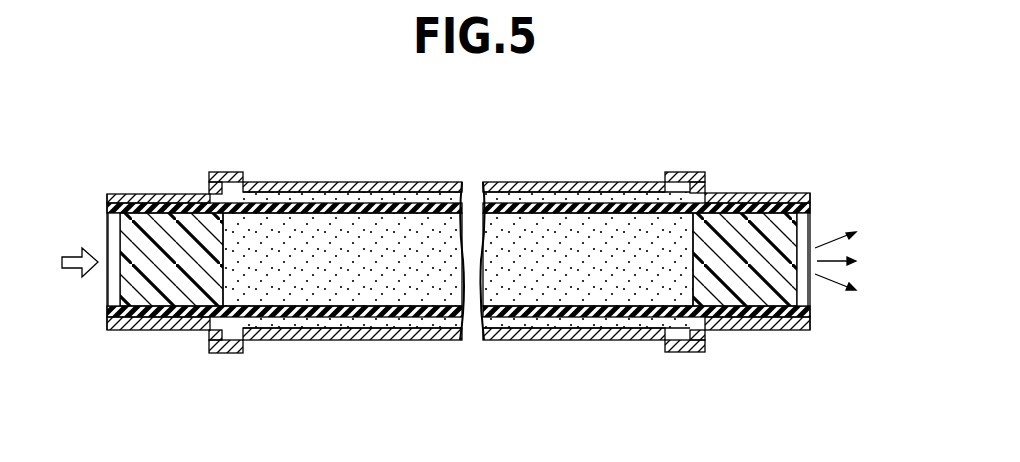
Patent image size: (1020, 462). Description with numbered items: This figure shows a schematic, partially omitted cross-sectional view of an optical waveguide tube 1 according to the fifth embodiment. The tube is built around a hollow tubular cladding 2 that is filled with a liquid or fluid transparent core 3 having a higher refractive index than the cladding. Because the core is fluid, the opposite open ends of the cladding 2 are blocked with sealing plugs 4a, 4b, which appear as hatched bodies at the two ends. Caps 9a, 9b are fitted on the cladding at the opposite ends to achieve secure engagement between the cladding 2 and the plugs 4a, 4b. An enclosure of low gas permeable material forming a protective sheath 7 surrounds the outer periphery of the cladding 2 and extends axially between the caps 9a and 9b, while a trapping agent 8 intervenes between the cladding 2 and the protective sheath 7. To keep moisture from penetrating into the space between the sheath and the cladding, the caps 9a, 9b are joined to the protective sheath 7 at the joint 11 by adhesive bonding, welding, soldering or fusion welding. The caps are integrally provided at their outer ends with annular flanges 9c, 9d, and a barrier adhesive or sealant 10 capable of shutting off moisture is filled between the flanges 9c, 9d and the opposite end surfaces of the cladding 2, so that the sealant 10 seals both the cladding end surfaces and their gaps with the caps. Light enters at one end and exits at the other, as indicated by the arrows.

The optical waveguide tube 1 is at (535, 170).
The hollow tubular cladding 2 is at (310, 208).
The core 3 is at (387, 298).
The sealing plug 4a is at (177, 240).
The sealing plug 4b is at (741, 235).
The protective sheath 7 is at (387, 186).
The trapping agent 8 is at (588, 338).
The cap 9a is at (177, 331).
The cap 9b is at (752, 336).
The annular flange 9c is at (106, 331).
The annular flange 9d is at (810, 200).
The sealant 10 is at (113, 194).
The joint 11 is at (233, 172).